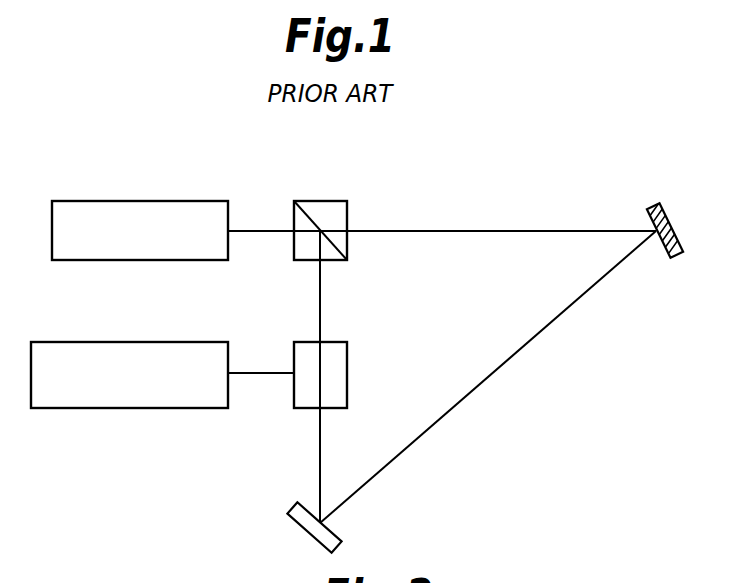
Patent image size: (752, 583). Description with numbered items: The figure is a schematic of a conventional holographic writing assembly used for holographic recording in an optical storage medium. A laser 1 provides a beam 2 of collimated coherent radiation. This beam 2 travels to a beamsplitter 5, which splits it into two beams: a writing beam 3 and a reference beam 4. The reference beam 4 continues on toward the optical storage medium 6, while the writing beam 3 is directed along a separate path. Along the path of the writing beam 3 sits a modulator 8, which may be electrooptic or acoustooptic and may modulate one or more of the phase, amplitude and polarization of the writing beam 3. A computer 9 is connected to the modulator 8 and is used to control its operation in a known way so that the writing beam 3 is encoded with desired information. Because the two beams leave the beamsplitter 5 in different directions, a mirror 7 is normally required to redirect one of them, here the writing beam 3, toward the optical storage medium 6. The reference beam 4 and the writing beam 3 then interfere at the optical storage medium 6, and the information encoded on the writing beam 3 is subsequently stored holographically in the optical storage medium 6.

The laser 1 is at (138, 201).
The beam 2 is at (250, 230).
The writing beam 3 is at (320, 310).
The reference beam 4 is at (454, 231).
The beamsplitter 5 is at (328, 201).
The optical storage medium 6 is at (656, 204).
The mirror 7 is at (296, 505).
The modulator 8 is at (347, 367).
The computer 9 is at (178, 408).